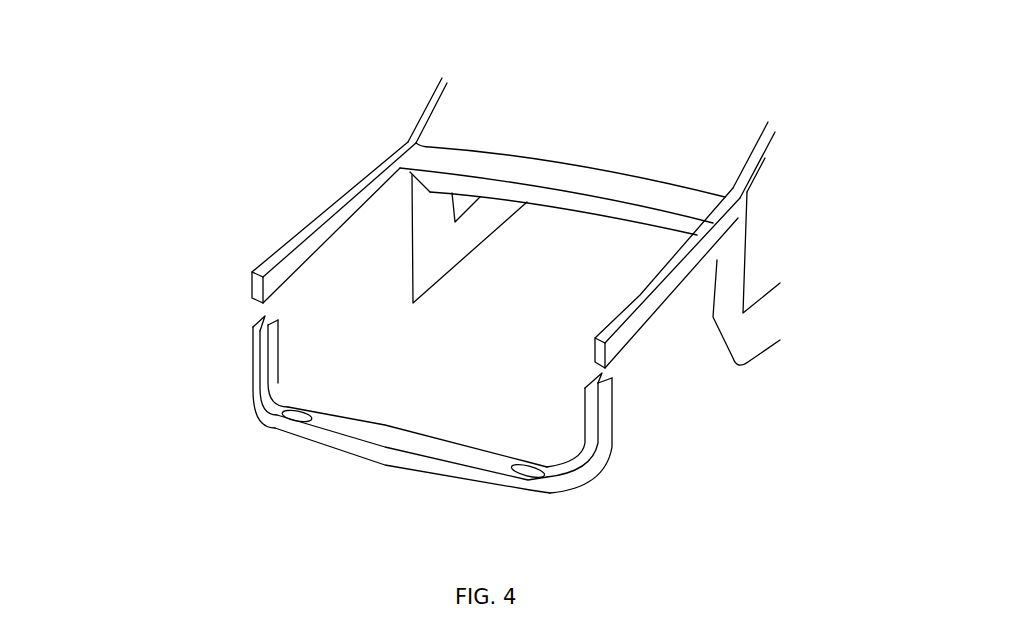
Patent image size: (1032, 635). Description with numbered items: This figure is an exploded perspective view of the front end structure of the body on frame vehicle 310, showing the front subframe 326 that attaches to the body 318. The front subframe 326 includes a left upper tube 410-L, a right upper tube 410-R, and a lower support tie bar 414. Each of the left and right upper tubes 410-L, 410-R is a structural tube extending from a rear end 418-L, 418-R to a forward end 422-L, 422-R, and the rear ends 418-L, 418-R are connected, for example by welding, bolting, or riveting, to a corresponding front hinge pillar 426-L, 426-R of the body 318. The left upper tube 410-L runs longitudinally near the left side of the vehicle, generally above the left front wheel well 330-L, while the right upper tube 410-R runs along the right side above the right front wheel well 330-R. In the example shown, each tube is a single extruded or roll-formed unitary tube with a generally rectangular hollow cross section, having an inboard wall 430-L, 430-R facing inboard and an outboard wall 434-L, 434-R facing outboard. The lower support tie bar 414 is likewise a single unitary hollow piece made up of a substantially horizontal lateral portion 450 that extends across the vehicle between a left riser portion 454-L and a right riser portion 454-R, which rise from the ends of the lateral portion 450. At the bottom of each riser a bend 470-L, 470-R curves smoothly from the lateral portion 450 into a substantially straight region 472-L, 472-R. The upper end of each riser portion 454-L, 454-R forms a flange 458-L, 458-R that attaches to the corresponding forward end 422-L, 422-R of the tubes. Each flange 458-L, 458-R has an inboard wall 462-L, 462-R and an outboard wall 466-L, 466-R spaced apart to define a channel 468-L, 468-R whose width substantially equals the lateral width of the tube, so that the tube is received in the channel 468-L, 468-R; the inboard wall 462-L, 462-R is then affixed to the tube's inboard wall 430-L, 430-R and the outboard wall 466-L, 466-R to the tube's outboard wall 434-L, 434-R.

The body on frame vehicle 310 is at (200, 448).
The body 318 is at (405, 112).
The front subframe 326 is at (205, 307).
The right front wheel well 330-R is at (345, 268).
The left front wheel well 330-L is at (697, 330).
The right upper tube 410-R is at (327, 217).
The left upper tube 410-L is at (660, 313).
The lower support tie bar 414 is at (388, 462).
The rear end 418-R is at (408, 142).
The rear end 418-L is at (732, 228).
The forward end 422-R is at (250, 274).
The forward end 422-L is at (603, 343).
The front hinge pillar 426-R is at (432, 210).
The front hinge pillar 426-L is at (733, 277).
The inboard wall 430-R is at (365, 205).
The inboard wall 430-L is at (600, 337).
The outboard wall 434-R is at (250, 285).
The outboard wall 434-L is at (703, 260).
The lateral portion 450 is at (447, 486).
The right riser portion 454-R is at (238, 394).
The left riser portion 454-L is at (622, 456).
The flange 458-R is at (292, 329).
The flange 458-L is at (572, 378).
The inboard wall 462-R is at (272, 333).
The inboard wall 462-L is at (585, 393).
The outboard wall 466-R is at (253, 330).
The outboard wall 466-L is at (612, 403).
The channel 468-R is at (253, 348).
The channel 468-L is at (612, 427).
The bend 470-R is at (268, 423).
The bend 470-L is at (580, 483).
The straight region 472-R is at (268, 367).
The straight region 472-L is at (583, 418).